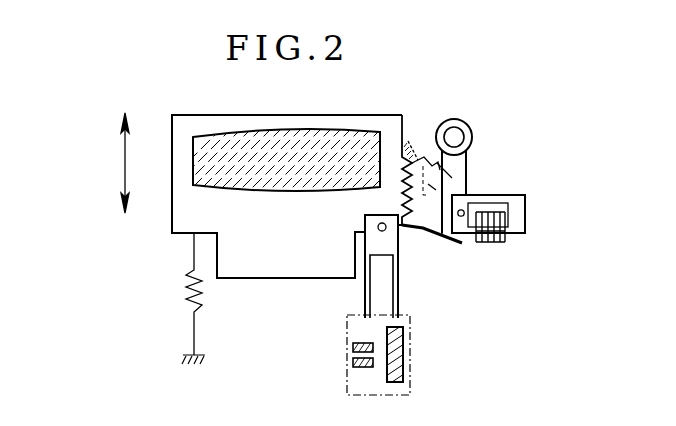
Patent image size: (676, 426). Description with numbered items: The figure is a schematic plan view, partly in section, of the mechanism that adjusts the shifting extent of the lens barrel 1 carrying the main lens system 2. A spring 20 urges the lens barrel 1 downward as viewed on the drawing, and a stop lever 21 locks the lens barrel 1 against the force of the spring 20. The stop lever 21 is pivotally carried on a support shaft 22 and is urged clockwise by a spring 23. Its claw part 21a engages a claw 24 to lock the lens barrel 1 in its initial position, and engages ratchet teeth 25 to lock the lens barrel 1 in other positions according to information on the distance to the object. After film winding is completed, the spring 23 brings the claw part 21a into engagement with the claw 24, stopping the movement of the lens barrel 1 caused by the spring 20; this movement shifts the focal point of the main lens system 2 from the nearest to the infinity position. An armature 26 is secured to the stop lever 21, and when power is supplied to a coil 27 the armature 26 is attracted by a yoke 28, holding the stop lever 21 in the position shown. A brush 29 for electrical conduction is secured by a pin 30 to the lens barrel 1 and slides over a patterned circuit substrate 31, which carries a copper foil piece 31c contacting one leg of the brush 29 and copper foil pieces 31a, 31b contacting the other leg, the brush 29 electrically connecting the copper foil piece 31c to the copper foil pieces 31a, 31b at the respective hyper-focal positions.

The lens barrel 1 is at (255, 279).
The main lens system 2 is at (250, 135).
The spring 20 is at (192, 330).
The stop lever 21 is at (464, 166).
The claw part 21a is at (443, 236).
The support shaft 22 is at (458, 128).
The spring 23 is at (432, 160).
The claw 24 is at (408, 232).
The ratchet teeth 25 is at (433, 187).
The armature 26 is at (465, 222).
The coil 27 is at (498, 244).
The yoke 28 is at (525, 213).
The brush 29 is at (392, 245).
The pin 30 is at (366, 225).
The patterned circuit substrate 31 is at (405, 387).
The copper foil piece 31a is at (356, 366).
The copper foil piece 31b is at (353, 347).
The copper foil piece 31c is at (404, 352).